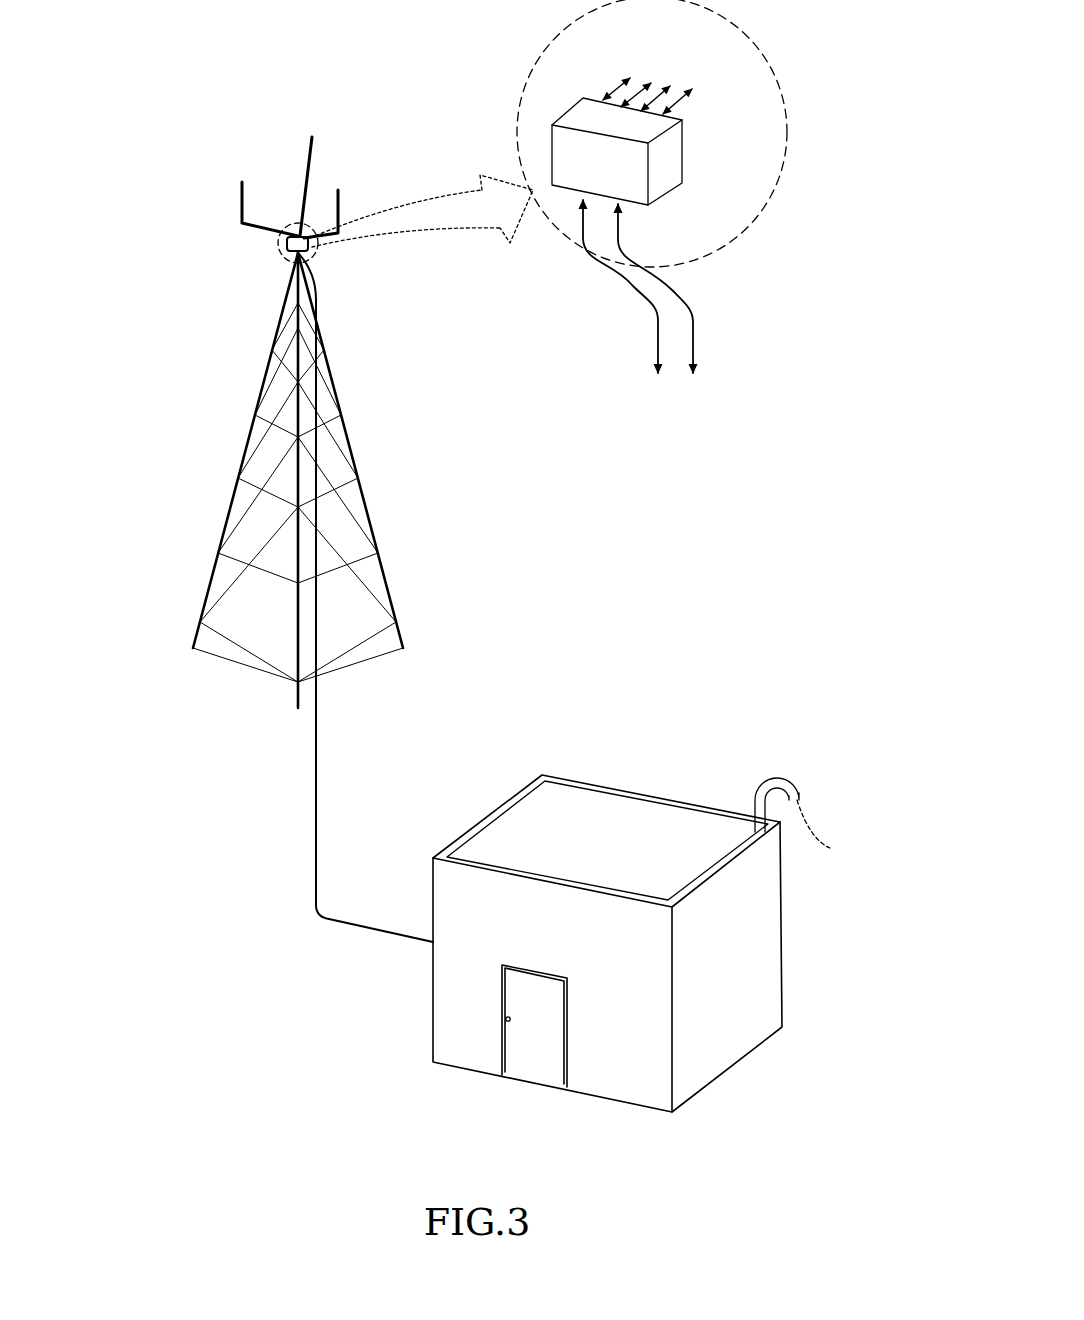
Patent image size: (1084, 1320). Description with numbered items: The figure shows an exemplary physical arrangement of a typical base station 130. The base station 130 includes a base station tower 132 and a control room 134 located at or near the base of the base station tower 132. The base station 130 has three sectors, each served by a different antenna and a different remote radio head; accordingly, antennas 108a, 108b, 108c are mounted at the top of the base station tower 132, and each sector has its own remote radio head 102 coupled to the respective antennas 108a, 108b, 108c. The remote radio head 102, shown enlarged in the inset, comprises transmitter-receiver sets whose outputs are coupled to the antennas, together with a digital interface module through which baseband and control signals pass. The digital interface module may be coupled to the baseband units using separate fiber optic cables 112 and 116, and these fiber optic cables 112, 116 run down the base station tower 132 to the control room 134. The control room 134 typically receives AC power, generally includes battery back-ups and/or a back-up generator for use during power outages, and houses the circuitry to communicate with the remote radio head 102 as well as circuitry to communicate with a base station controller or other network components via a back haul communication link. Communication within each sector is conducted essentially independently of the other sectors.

The remote radio head 102 is at (318, 258).
The antenna 108a is at (343, 212).
The antenna 108b is at (316, 150).
The antenna 108c is at (238, 200).
The fiber optic cable 112 is at (650, 305).
The second fiber optic cable 116 is at (688, 290).
The base station 130 is at (146, 591).
The base station tower 132 is at (370, 500).
The control room 134 is at (740, 1063).